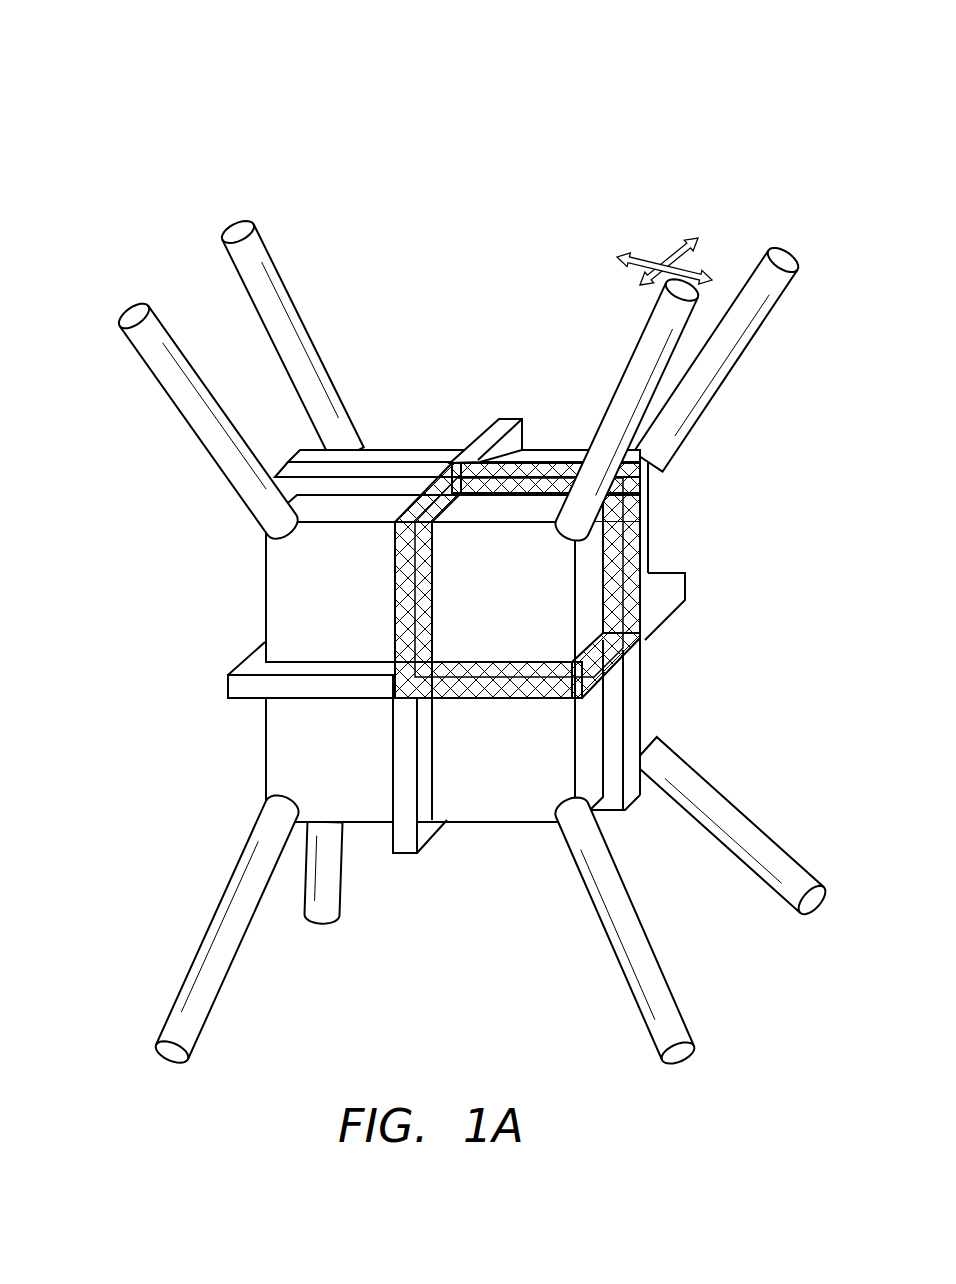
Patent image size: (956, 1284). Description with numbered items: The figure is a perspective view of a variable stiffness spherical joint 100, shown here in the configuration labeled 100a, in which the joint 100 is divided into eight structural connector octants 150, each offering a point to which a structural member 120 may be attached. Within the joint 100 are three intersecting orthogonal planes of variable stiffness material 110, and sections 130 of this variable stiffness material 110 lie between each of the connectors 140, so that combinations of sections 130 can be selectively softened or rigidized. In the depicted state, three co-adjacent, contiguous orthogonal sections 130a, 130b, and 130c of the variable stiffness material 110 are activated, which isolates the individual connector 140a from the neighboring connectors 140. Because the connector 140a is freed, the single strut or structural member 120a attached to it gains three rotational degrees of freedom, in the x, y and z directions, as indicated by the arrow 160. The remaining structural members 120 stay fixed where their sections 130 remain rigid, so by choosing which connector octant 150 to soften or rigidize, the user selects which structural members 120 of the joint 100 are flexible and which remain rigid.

The variable stiffness spherical joint 100 is at (383, 232).
The block assembly 100a is at (480, 357).
The variable stiffness material 110 is at (390, 468).
The structural member 120 is at (180, 432).
The structural member 120a is at (660, 303).
The section of variable stiffness material 130 is at (615, 700).
The section of variable stiffness material 130a is at (643, 518).
The section of variable stiffness material 130b is at (603, 643).
The section of variable stiffness material 130c is at (458, 482).
The connector 140 is at (287, 590).
The connector 140a is at (535, 508).
The structural connector octant 150 is at (641, 563).
The arrow 160 is at (659, 254).